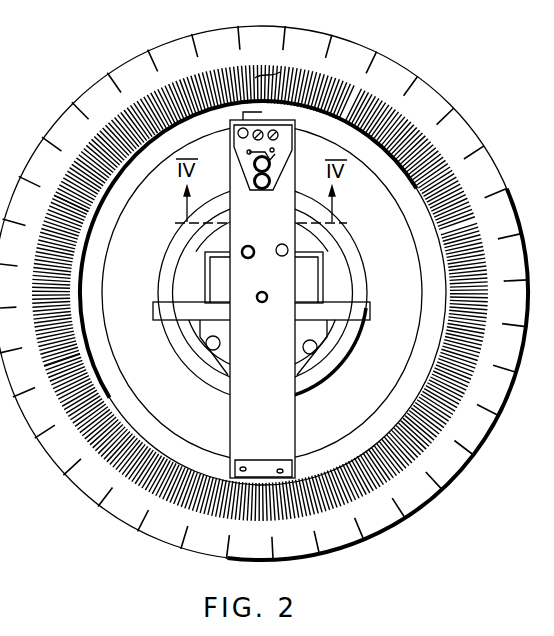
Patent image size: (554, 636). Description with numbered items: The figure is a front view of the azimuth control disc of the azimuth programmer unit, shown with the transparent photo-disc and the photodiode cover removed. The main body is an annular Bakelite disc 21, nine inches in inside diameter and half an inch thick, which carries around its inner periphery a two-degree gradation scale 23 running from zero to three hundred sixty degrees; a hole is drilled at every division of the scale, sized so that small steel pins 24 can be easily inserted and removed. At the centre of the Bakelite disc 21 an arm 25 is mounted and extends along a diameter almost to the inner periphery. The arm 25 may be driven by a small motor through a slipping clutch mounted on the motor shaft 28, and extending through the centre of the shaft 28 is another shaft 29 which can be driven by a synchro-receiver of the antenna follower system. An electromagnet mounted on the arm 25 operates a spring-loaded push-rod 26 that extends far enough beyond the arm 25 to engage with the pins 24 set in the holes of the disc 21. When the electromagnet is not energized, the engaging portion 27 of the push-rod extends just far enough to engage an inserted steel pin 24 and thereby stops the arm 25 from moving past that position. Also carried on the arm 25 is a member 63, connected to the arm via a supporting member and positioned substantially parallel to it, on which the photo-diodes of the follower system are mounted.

The annular Bakelite disc 21 is at (100, 102).
The gradation scale 23 is at (53, 148).
The steel pins 24 is at (258, 78).
The arm 25 is at (238, 422).
The spring-loaded push-rod 26 is at (248, 200).
The engaging portion 27 is at (238, 112).
The motor shaft 28 is at (258, 292).
The shaft 29 is at (262, 303).
The member 63 is at (238, 146).